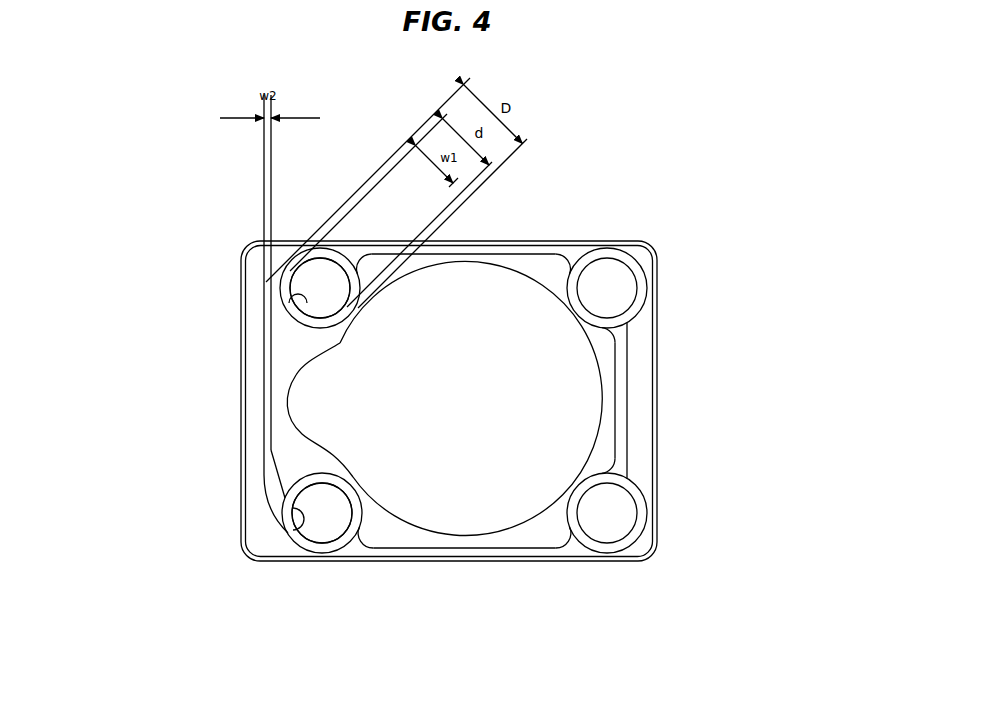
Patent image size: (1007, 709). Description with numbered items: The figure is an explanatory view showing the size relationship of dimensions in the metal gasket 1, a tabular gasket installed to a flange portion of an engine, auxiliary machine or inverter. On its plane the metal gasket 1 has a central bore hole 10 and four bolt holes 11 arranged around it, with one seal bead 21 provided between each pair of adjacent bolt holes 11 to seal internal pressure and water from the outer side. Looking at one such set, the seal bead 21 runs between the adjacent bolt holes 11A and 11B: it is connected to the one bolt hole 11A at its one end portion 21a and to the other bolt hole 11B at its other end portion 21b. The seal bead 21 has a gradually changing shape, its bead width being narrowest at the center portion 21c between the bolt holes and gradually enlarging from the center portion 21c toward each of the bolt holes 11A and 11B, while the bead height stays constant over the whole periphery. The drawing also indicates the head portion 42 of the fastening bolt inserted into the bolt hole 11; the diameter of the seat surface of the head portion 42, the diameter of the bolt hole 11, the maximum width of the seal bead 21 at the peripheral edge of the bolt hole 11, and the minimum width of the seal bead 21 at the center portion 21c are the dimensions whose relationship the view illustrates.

The metal gasket 1 is at (636, 212).
The bore hole 10 is at (485, 410).
The bolt hole 11 is at (622, 288).
The bolt hole 11A is at (308, 260).
The bolt hole 11B is at (333, 518).
The seal bead 21 is at (443, 373).
The one end portion 21a is at (295, 285).
The other end portion 21b is at (310, 535).
The center portion 21c is at (265, 401).
The head portion 42 is at (317, 278).